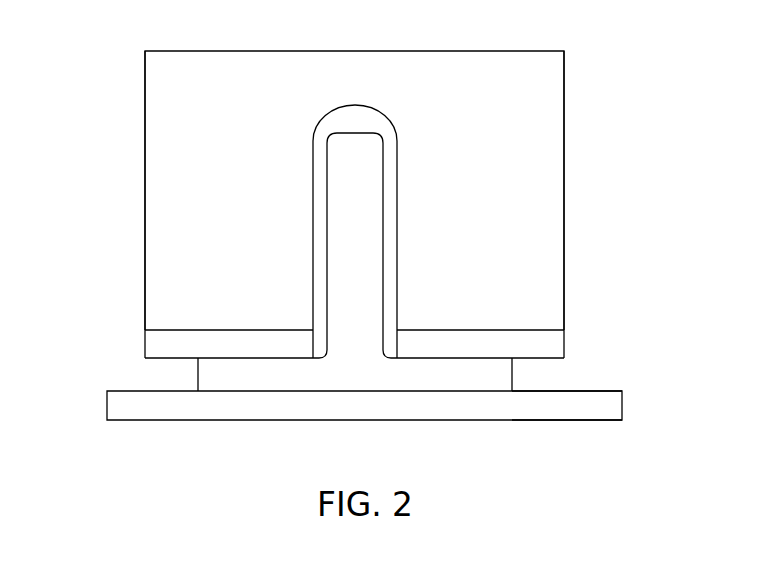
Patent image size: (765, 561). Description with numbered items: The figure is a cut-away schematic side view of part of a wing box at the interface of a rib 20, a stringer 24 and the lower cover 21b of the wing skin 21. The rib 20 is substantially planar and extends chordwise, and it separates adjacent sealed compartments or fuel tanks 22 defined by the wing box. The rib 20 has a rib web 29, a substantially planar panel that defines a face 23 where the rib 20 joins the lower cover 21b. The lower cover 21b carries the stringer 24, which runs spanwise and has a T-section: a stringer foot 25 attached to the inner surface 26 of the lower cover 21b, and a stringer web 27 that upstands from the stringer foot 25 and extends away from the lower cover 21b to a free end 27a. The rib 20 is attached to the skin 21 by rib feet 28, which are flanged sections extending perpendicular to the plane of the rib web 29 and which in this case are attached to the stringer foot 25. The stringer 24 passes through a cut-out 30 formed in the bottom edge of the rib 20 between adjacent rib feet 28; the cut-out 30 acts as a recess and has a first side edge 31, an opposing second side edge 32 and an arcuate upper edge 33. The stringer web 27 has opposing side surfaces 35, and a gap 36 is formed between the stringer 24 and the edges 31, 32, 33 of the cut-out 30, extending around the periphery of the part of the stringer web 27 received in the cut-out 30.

The rib 20 is at (545, 98).
The skin 21 is at (131, 420).
The lower cover 21b is at (562, 421).
The fuel tank 22 is at (190, 208).
The face 23 is at (543, 212).
The stringer 24 is at (387, 172).
The stringer foot 25 is at (434, 372).
The inner surface 26 is at (584, 390).
The stringer web 27 is at (350, 263).
The free end 27a is at (360, 133).
The rib foot 28 is at (153, 343).
The rib web 29 is at (155, 115).
The cut-out 30 is at (318, 163).
The first side edge 31 is at (313, 250).
The second side edge 32 is at (397, 218).
The upper edge 33 is at (350, 104).
The side surface 35 is at (323, 298).
The gap 36 is at (318, 208).